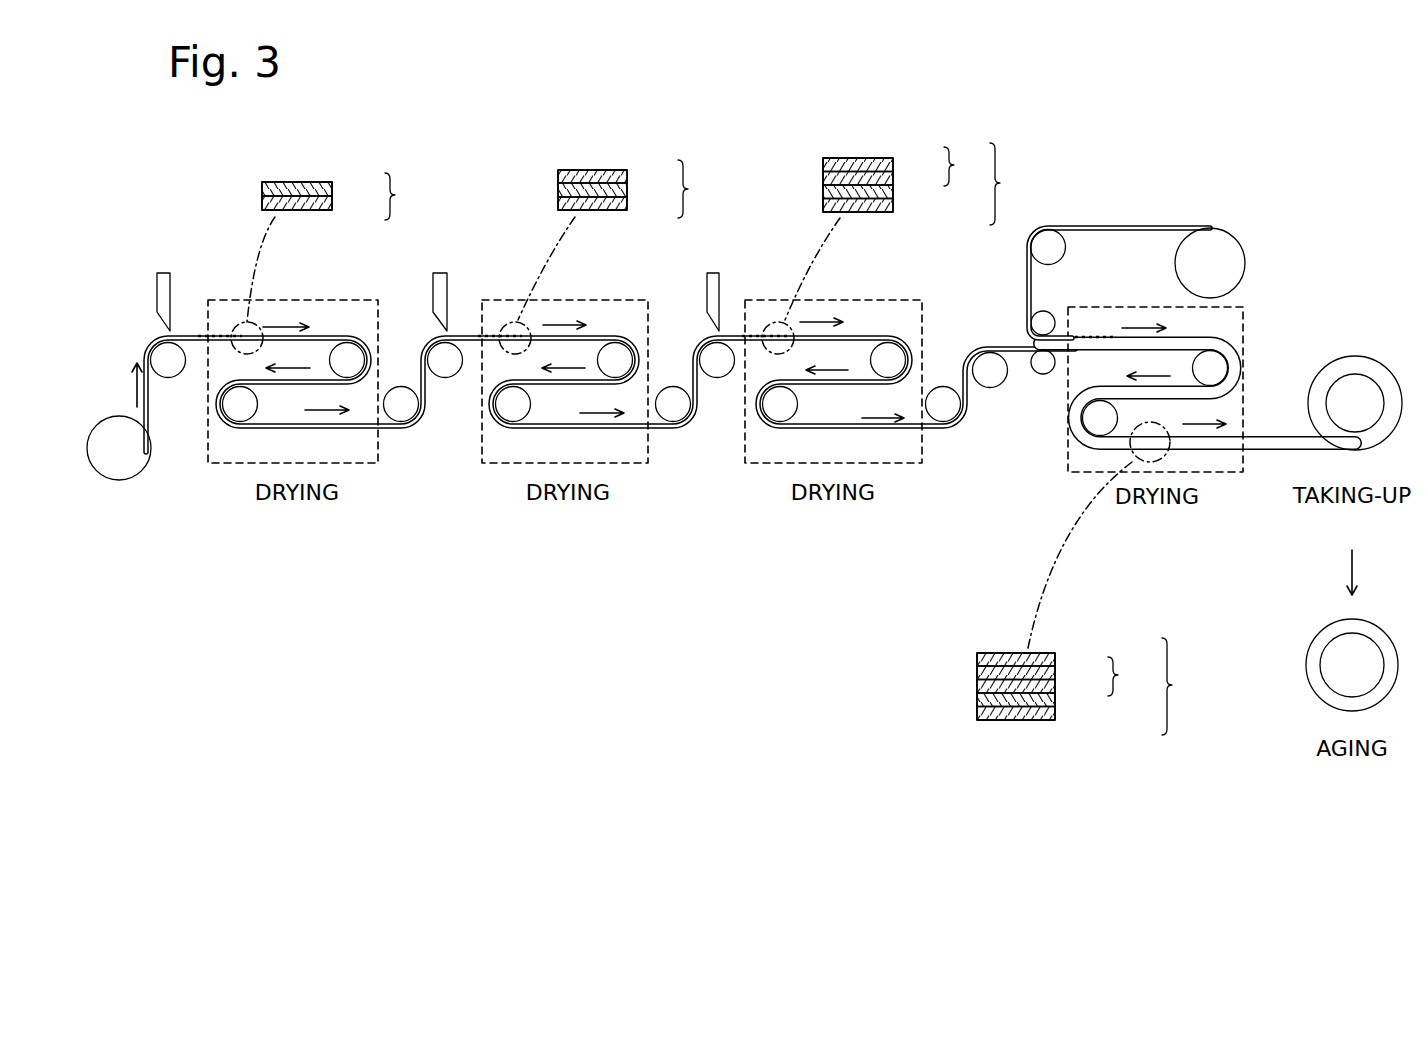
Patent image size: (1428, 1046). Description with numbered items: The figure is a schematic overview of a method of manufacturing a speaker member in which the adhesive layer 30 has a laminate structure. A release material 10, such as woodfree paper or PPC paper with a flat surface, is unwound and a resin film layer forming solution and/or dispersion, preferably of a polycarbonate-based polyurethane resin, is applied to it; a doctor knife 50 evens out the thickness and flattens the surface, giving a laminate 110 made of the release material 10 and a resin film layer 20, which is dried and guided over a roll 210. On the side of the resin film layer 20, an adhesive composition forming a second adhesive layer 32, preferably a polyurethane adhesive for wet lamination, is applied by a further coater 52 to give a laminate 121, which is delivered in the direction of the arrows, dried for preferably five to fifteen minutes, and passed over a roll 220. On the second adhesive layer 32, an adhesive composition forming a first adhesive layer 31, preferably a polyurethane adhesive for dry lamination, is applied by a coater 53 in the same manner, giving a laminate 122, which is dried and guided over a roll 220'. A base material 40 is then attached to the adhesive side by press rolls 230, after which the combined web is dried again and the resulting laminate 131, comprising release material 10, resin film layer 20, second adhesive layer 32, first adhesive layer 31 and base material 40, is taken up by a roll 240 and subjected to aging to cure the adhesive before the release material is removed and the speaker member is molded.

The release material 10 is at (152, 416).
The resin film layer 20 is at (332, 189).
The adhesive layer 30 is at (1047, 421).
The first adhesive layer 31 is at (893, 165).
The second adhesive layer 32 is at (627, 177).
The base material 40 is at (1110, 228).
The doctor knife 50 is at (170, 284).
The coater for first adhesive layer 52 is at (447, 282).
The coater for second adhesive layer 53 is at (719, 282).
The laminate 110 is at (330, 444).
The laminate 121 is at (871, 444).
The laminate 122 is at (935, 184).
The laminate 131 is at (1097, 686).
The roll 210 is at (403, 406).
The roll 220 is at (678, 437).
The guide roller 220' is at (952, 440).
The press rolls 230 is at (1043, 366).
The roll 240 is at (1347, 395).